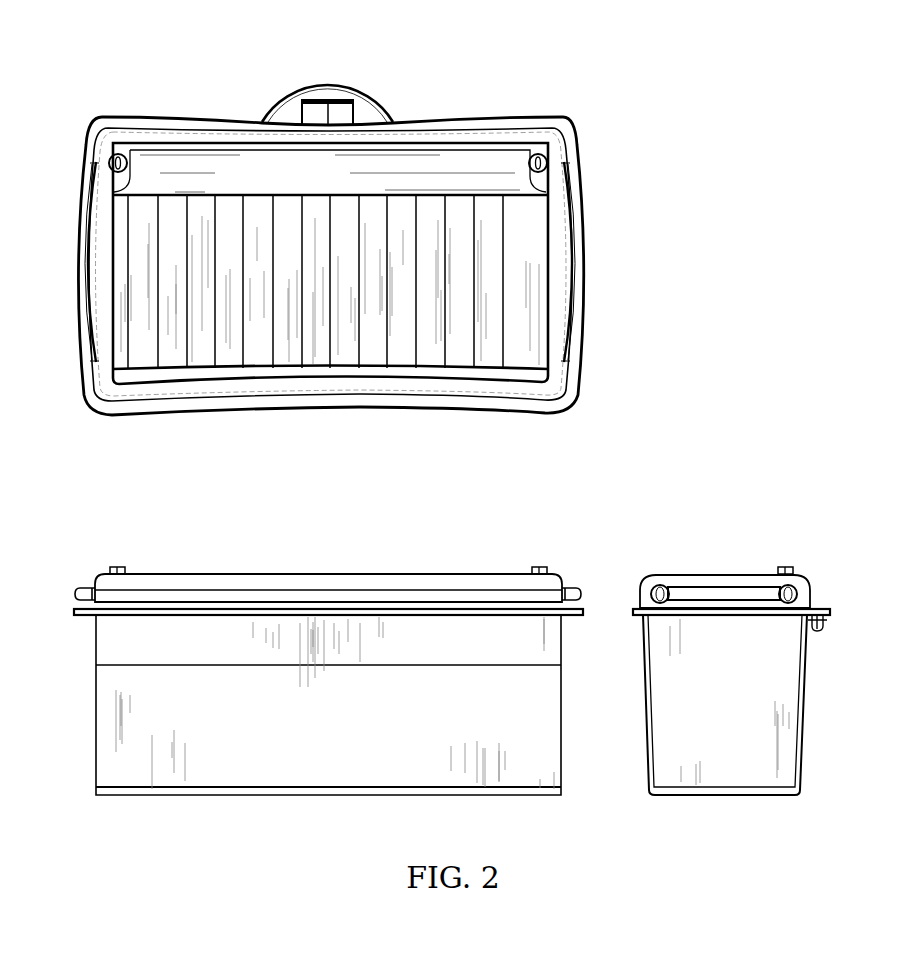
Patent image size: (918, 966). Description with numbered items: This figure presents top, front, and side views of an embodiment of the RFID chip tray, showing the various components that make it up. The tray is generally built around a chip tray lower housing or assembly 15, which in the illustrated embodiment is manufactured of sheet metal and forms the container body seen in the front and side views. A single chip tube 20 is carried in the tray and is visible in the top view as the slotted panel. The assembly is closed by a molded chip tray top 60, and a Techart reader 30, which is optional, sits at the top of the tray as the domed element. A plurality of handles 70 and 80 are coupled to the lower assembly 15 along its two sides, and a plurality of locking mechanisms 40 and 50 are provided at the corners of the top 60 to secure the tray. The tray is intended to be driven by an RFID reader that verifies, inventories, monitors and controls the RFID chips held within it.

The chip tray lower housing 15 is at (806, 725).
The chip tube 20 is at (291, 187).
The Techart reader 30 is at (312, 110).
The locking mechanism 40 is at (111, 132).
The locking mechanism 50 is at (543, 152).
The molded chip tray top 60 is at (317, 386).
The handle 70 is at (582, 210).
The handle 80 is at (78, 345).